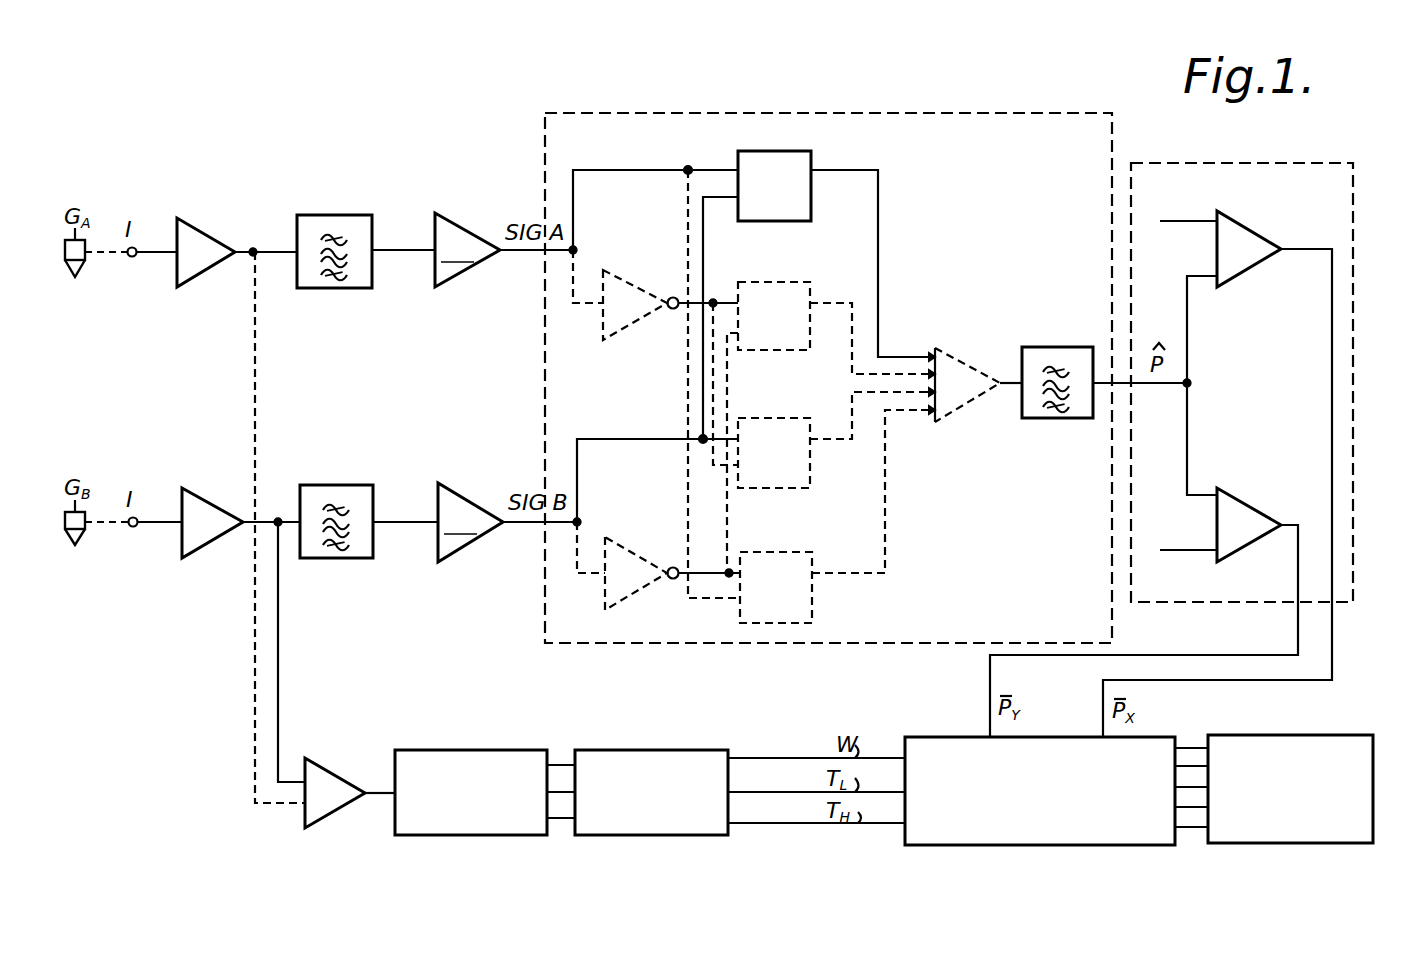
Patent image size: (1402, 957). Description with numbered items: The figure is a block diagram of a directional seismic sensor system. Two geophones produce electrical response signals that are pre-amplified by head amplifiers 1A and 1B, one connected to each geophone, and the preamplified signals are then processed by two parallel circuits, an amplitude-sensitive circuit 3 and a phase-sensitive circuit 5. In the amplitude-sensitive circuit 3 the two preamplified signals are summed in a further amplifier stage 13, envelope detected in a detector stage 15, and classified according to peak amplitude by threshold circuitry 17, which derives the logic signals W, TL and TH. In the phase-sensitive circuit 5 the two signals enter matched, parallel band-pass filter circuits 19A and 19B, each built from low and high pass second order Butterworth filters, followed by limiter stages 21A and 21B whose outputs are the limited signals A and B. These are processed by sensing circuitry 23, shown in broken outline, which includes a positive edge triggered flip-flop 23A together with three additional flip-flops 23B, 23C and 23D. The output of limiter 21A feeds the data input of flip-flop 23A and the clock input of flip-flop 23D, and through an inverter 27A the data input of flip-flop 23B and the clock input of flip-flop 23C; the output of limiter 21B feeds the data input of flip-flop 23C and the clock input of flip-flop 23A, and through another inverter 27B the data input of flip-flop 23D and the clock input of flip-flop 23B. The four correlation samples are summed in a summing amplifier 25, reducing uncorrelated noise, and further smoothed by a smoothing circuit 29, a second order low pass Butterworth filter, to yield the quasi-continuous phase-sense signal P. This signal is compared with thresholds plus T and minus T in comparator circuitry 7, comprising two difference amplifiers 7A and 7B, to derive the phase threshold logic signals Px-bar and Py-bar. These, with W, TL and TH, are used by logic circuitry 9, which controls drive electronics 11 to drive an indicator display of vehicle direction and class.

The head amplifier 1A is at (208, 238).
The head amplifier 1B is at (208, 508).
The amplitude-sensitive circuit 3 is at (728, 838).
The phase-sensitive circuit 5 is at (1102, 82).
The comparator circuitry 7 is at (1270, 163).
The difference amplifier 7A is at (1250, 238).
The difference amplifier 7B is at (1248, 512).
The logic circuitry 9 is at (962, 845).
The drive electronics 11 is at (1292, 735).
The further amplifier stage 13 is at (330, 775).
The detector stage 15 is at (470, 750).
The threshold circuitry 17 is at (675, 750).
The band-pass filter circuit 19A is at (333, 215).
The band-pass filter circuit 19B is at (333, 485).
The limiter stage 21A is at (462, 230).
The limiter stage 21B is at (464, 502).
The sensing circuitry 23 is at (545, 643).
The positive edge triggered flip-flop 23A is at (752, 151).
The flip-flop 23B is at (772, 282).
The flip-flop 23C is at (752, 418).
The flip-flop 23D is at (754, 552).
The summing amplifier 25 is at (972, 362).
The inverter 27A is at (632, 283).
The inverter 27B is at (632, 550).
The smoothing circuit 29 is at (1072, 333).